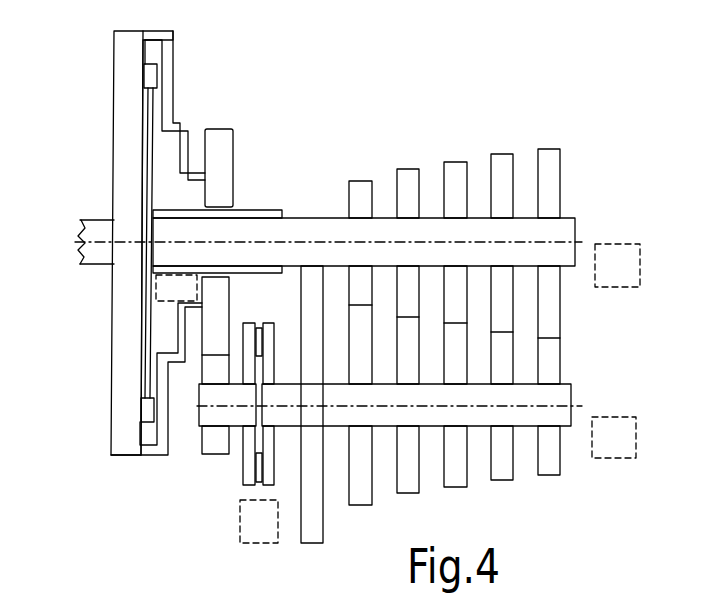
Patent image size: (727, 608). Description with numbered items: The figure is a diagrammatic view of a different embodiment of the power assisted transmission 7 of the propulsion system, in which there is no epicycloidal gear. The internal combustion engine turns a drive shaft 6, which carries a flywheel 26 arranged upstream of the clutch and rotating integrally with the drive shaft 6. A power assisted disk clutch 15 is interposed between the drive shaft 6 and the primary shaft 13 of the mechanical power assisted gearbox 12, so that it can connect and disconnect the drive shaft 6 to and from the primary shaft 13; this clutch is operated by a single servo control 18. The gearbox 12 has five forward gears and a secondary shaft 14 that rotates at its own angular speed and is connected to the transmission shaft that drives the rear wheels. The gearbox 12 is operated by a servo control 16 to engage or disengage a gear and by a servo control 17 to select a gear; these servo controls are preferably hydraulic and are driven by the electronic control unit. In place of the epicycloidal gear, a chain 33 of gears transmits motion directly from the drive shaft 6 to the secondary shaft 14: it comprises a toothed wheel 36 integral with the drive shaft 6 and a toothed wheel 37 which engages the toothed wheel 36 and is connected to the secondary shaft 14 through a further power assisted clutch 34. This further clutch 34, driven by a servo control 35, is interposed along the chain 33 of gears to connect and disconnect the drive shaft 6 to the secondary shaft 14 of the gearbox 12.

The drive shaft 6 is at (92, 262).
The power assisted transmission 7 is at (430, 280).
The mechanical power assisted gearbox 12 is at (522, 122).
The primary shaft 13 is at (567, 232).
The secondary shaft 14 is at (560, 393).
The power assisted disk clutch 15 is at (165, 168).
The servo control 16 is at (617, 265).
The servo control 17 is at (614, 437).
The servo control 18 is at (147, 295).
The flywheel 26 is at (120, 172).
The chain of gears 33 is at (170, 464).
The further power assisted clutch 34 is at (223, 490).
The servo control 35 is at (259, 521).
The toothed wheel 36 is at (227, 163).
The toothed wheel 37 is at (212, 447).